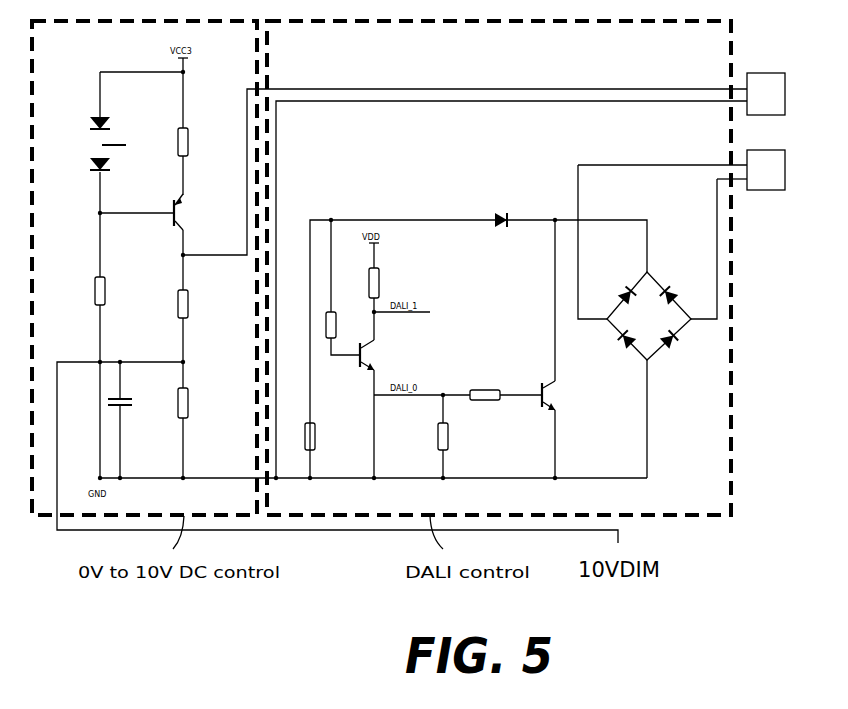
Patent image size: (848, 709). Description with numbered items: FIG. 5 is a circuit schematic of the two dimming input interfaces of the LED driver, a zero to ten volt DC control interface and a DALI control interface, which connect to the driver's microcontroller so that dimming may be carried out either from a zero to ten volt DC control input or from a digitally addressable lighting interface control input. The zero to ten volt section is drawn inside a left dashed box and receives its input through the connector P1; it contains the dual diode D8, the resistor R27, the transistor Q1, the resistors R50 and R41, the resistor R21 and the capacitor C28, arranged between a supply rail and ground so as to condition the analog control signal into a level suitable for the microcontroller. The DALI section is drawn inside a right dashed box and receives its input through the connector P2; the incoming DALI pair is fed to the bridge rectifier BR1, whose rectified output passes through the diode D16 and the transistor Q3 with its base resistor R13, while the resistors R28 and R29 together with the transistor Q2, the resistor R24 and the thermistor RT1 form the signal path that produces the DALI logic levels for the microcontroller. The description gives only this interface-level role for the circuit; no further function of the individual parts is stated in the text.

The dual diode BAV99 D8 is at (123, 130).
The resistor 10K R27 is at (193, 142).
The PNP transistor BC856B Q1 is at (198, 212).
The resistor 10K R50 is at (87, 291).
The resistor 10K R41 is at (193, 304).
The capacitor 0.1uF C28 is at (137, 404).
The resistor 10K R21 is at (192, 403).
The resistor 22K R24 is at (320, 436).
The resistor R29 is at (340, 325).
The resistor 10K R28 is at (384, 283).
The NPN transistor BC846A Q2 is at (386, 355).
The thermistor 10K RT1 is at (431, 436).
The resistor 1K R13 is at (485, 395).
The NPN transistor BC846A Q3 is at (568, 393).
The diode DL4148 D16 is at (493, 218).
The bridge rectifier MB6S-TP BR1 is at (648, 322).
The 0-10V connector P1 is at (765, 93).
The DALI connector P2 is at (766, 169).